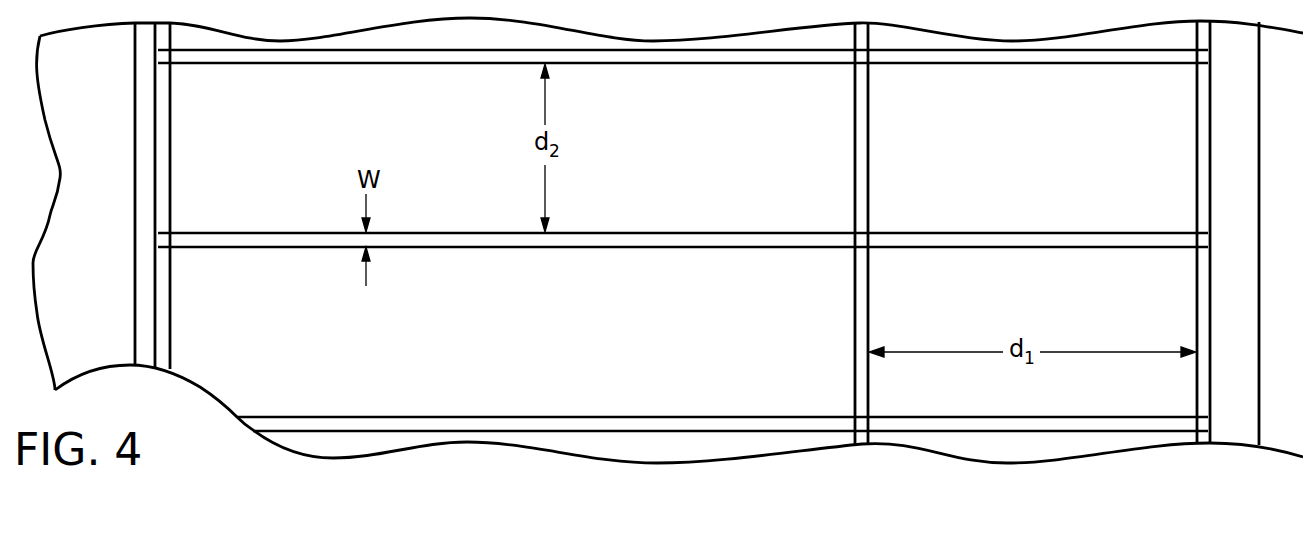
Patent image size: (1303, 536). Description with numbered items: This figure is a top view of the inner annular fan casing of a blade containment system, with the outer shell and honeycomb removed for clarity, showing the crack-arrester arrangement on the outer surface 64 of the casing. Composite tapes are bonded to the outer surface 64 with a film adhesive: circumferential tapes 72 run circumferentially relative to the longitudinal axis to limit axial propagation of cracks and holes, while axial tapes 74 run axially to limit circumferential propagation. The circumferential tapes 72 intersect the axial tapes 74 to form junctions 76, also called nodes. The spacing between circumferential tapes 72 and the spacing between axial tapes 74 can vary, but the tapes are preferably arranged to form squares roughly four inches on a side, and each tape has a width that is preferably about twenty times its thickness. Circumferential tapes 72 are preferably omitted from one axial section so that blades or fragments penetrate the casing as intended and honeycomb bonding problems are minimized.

The outer surface 64 is at (629, 322).
The circumferential tapes 72 is at (163, 142).
The axial tapes 74 is at (1046, 58).
The junctions 76 is at (859, 238).